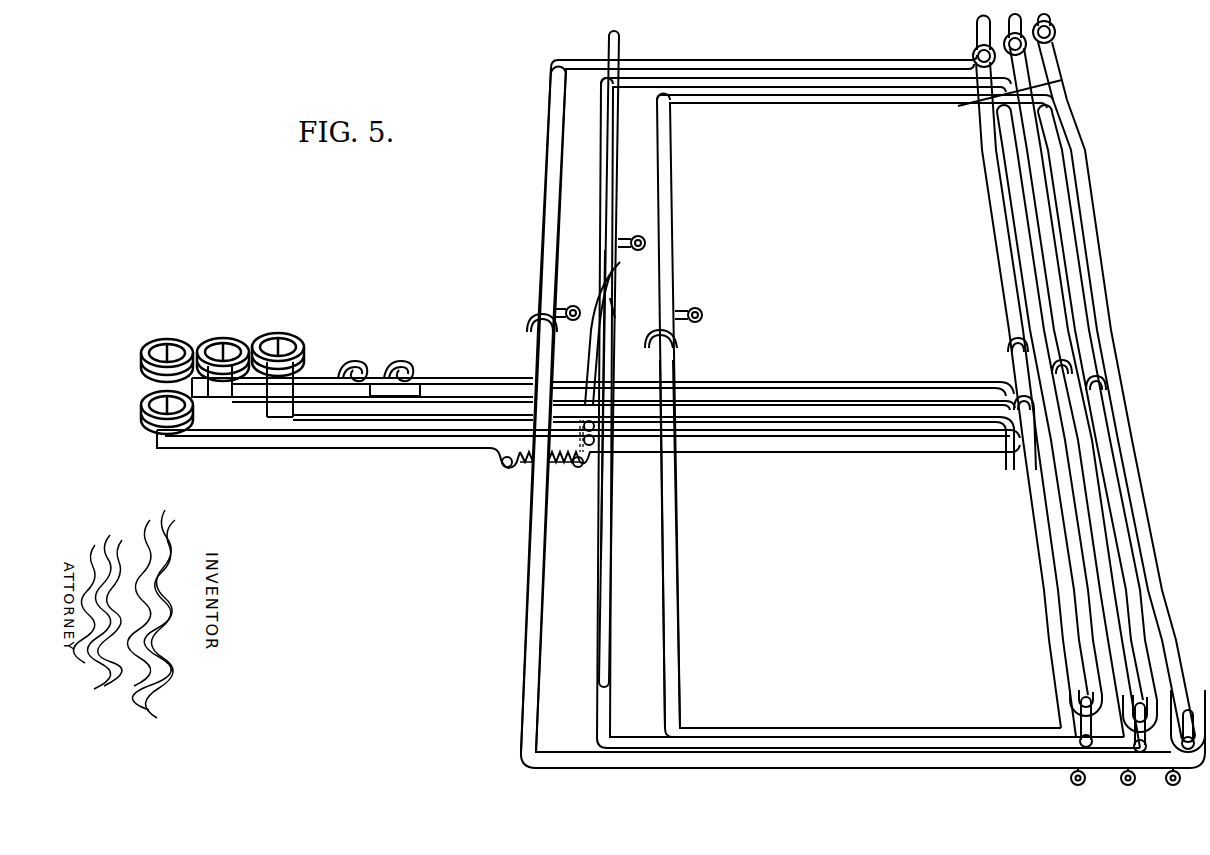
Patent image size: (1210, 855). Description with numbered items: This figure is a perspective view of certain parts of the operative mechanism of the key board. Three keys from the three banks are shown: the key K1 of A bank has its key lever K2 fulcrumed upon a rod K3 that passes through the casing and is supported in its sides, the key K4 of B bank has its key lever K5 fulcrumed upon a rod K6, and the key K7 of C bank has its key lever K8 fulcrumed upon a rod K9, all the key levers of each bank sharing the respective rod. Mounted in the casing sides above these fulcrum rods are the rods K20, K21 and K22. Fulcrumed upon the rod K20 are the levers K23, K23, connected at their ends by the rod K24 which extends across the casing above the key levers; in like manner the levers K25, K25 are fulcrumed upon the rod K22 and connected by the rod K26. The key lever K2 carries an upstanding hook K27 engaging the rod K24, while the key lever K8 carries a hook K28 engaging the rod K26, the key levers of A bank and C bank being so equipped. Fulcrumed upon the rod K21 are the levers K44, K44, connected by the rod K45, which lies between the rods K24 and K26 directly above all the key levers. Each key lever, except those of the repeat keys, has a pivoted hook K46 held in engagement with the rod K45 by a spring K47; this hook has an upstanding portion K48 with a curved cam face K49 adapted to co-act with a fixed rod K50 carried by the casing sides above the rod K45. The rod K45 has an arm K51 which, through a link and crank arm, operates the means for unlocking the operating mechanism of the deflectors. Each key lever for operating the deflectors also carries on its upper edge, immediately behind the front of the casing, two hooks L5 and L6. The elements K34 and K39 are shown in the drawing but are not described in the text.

The levers K23 is at (585, 70).
The levers K44 is at (647, 78).
The levers K25 is at (810, 98).
The rod K26 is at (680, 545).
The rod K24 is at (555, 218).
The upstanding hook K27 is at (532, 322).
The pivoted hook K46 is at (583, 376).
The eye on left tube K34 is at (568, 310).
The rod K45 is at (600, 690).
The fixed rod K50 is at (600, 565).
The arm K51 is at (633, 237).
The upstanding portion K48 is at (596, 282).
The curved cam face K49 is at (612, 300).
The eye on inner tube K39 is at (693, 308).
The hook K28 is at (647, 342).
The key lever K2 is at (447, 420).
The key lever K5 is at (875, 415).
The key lever K8 is at (380, 455).
The spring K47 is at (562, 482).
The hook L6 is at (354, 360).
The hook L5 is at (396, 359).
The key K4 is at (223, 336).
The key K1 is at (292, 330).
The key K7 is at (148, 408).
The rod K22 is at (971, 42).
The rod K21 is at (1007, 26).
The rod K20 is at (1052, 23).
The rod K9 is at (980, 192).
The rod K3 is at (1100, 408).
The rod K6 is at (1098, 572).